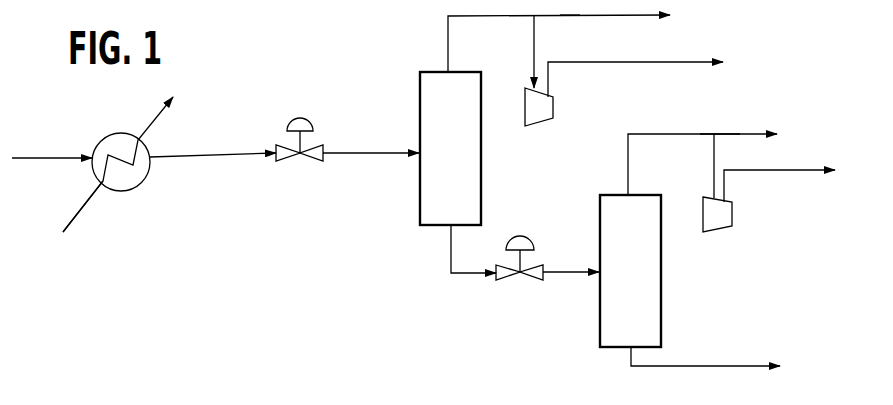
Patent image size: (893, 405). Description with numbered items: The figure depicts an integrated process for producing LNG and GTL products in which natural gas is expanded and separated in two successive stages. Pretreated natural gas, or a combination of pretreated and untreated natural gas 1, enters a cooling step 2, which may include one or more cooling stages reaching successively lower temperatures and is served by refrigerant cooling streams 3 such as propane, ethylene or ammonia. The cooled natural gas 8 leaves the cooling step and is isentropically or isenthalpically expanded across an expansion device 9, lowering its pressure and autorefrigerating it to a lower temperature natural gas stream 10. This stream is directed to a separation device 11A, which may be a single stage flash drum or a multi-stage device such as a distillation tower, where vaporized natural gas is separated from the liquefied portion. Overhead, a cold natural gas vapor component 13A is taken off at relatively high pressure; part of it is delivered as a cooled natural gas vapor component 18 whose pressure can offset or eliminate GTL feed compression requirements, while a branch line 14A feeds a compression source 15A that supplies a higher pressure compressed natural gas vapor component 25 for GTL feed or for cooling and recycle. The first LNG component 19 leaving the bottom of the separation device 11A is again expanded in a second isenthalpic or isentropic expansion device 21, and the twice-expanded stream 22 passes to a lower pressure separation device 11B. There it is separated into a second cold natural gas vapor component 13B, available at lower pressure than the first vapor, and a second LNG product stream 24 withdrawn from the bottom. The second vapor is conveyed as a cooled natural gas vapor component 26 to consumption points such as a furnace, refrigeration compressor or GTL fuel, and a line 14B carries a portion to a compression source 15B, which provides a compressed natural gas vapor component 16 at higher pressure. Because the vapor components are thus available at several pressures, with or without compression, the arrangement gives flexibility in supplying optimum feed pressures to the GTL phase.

The natural gas 1 is at (45, 158).
The cooling step 2 is at (148, 178).
The cooling streams 3 is at (70, 217).
The cooled natural gas 8 is at (238, 154).
The expansion device 9 is at (286, 163).
The lower temperature natural gas stream 10 is at (378, 152).
The separation device 11A is at (418, 205).
The cold natural gas vapor component 13A is at (466, 18).
The first overhead branch line to compressor 14A is at (533, 70).
The compression source 15A is at (537, 128).
The cooled natural gas vapor component 18 is at (588, 17).
The compressed natural gas vapor component 25 is at (686, 61).
The first LNG component 19 is at (470, 275).
The expansion device 21 is at (503, 283).
The expanded bottoms line to second separator 22 is at (577, 270).
The separation device 11B is at (598, 325).
The second cold natural gas vapor component 13B is at (661, 133).
The cooled natural gas vapor component 26 is at (746, 132).
The second overhead branch line to compressor 14B is at (712, 178).
The compression source 15B is at (713, 233).
The compressed natural gas vapor component 16 is at (787, 172).
The second LNG product stream 24 is at (723, 365).